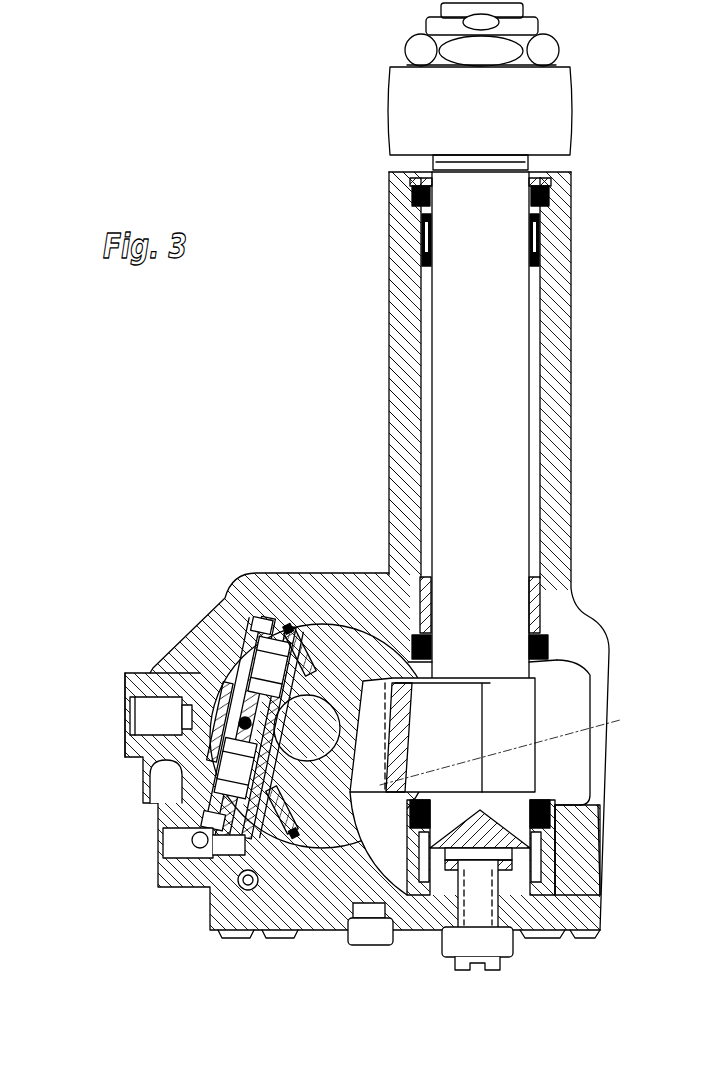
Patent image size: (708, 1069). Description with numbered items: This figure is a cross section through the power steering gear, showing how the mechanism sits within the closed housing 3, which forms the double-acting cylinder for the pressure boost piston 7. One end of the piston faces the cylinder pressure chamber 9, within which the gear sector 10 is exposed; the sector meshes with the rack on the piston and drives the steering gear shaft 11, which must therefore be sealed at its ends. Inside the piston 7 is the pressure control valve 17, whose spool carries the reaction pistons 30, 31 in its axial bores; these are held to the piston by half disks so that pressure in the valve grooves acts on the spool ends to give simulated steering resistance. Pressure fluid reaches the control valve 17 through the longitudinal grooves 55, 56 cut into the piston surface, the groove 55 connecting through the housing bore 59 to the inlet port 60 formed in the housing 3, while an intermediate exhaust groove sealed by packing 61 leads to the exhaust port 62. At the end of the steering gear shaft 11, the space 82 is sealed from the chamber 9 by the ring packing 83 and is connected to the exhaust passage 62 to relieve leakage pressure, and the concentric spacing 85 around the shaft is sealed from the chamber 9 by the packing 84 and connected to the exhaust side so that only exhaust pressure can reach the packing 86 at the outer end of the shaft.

The housing 3 is at (278, 612).
The pressure boost piston 7 is at (334, 650).
The cylinder pressure chamber 9 is at (590, 665).
The gear sector 10 is at (480, 720).
The steering gear shaft 11 is at (470, 808).
The pressure control valve 17 is at (92, 738).
The reaction piston 30 is at (222, 782).
The reaction piston 31 is at (240, 672).
The longitudinal groove 55 is at (225, 826).
The longitudinal groove 56 is at (262, 652).
The housing bore 59 is at (247, 860).
The inlet port 60 is at (177, 847).
The exhaust groove packing 61 is at (205, 718).
The exhaust port 62 is at (152, 720).
The space 82 is at (538, 897).
The ring packing 83 is at (550, 818).
The packing 84 is at (560, 654).
The concentric spacing 85 is at (532, 440).
The packing 86 is at (553, 207).